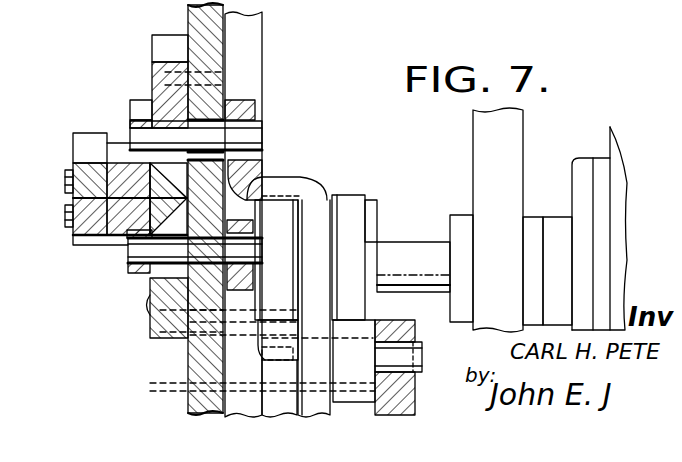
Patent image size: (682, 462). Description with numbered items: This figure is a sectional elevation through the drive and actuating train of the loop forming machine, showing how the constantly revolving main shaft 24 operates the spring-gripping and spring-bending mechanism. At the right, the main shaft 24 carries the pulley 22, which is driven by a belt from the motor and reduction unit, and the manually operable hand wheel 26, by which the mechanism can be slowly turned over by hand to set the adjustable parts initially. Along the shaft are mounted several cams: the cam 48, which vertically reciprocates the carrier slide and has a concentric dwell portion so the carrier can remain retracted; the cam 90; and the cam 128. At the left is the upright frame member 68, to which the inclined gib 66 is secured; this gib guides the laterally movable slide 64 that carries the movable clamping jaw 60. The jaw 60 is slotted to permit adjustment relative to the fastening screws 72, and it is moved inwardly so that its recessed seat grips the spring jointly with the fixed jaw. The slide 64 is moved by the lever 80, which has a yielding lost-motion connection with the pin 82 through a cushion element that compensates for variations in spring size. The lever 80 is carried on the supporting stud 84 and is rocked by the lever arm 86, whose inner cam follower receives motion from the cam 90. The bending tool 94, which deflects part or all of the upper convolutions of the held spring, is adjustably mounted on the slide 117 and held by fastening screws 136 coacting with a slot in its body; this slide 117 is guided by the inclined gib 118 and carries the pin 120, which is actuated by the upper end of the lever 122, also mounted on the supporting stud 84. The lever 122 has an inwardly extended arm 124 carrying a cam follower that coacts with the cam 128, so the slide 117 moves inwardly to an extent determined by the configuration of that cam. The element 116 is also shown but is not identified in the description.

The pulley 22 is at (618, 168).
The main shaft 24 is at (402, 249).
The hand wheel 26 is at (480, 157).
The cam 48 is at (234, 230).
The movable clamping jaw 60 is at (83, 236).
The slide 64 is at (118, 238).
The inclined gib 66 is at (163, 297).
The upright frame member 68 is at (198, 22).
The fastening screws 72 is at (66, 216).
The lever 80 is at (273, 212).
The pin 82 is at (128, 254).
The supporting stud 84 is at (425, 346).
The lever arm 86 is at (186, 403).
The cam 90 is at (293, 183).
The bending tool 94 is at (95, 178).
The collar 116 is at (354, 222).
The slide 117 is at (135, 172).
The inclined gib 118 is at (165, 82).
The pin 120 is at (150, 135).
The lever 122 is at (297, 183).
The inwardly extended arm 124 is at (313, 402).
The cam 128 is at (329, 198).
The fastening screws 136 is at (66, 175).